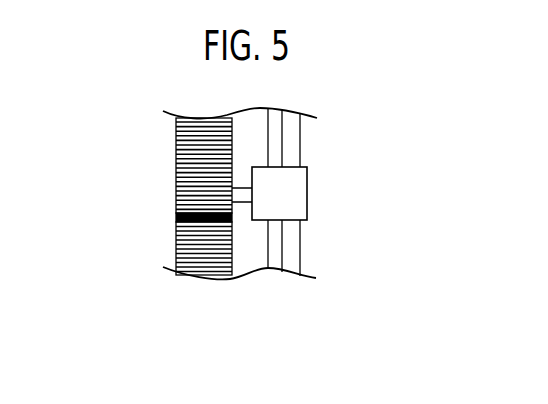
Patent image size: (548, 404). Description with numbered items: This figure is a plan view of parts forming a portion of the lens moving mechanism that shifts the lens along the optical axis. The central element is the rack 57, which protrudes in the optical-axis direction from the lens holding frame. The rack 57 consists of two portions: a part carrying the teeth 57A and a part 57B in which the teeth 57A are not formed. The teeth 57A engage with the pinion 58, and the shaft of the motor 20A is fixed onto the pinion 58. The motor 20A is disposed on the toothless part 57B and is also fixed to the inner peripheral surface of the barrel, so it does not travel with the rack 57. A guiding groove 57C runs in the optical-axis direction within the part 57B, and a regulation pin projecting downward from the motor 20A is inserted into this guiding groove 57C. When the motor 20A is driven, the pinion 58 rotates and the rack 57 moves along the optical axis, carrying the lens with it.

The rack 57 is at (150, 230).
The pinion 58 is at (177, 180).
The teeth 57A is at (200, 257).
The motor 20A is at (309, 184).
The guiding groove 57C is at (278, 245).
The part in which the teeth are not formed 57B is at (283, 258).